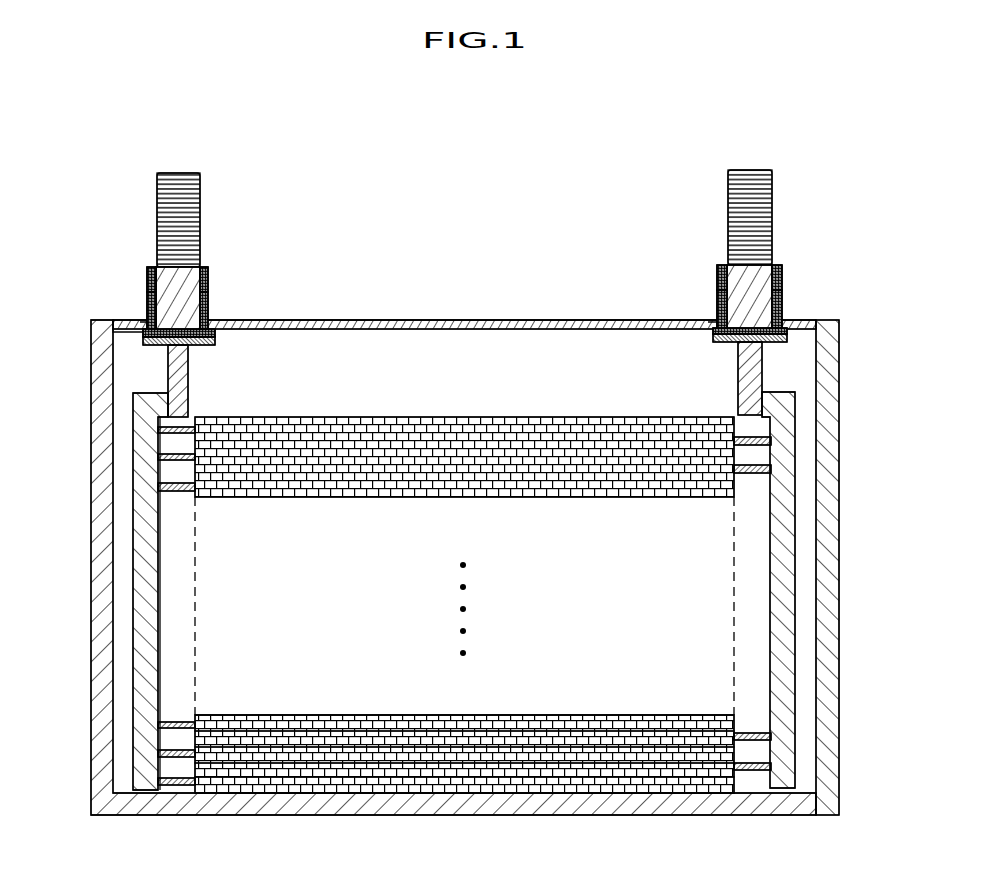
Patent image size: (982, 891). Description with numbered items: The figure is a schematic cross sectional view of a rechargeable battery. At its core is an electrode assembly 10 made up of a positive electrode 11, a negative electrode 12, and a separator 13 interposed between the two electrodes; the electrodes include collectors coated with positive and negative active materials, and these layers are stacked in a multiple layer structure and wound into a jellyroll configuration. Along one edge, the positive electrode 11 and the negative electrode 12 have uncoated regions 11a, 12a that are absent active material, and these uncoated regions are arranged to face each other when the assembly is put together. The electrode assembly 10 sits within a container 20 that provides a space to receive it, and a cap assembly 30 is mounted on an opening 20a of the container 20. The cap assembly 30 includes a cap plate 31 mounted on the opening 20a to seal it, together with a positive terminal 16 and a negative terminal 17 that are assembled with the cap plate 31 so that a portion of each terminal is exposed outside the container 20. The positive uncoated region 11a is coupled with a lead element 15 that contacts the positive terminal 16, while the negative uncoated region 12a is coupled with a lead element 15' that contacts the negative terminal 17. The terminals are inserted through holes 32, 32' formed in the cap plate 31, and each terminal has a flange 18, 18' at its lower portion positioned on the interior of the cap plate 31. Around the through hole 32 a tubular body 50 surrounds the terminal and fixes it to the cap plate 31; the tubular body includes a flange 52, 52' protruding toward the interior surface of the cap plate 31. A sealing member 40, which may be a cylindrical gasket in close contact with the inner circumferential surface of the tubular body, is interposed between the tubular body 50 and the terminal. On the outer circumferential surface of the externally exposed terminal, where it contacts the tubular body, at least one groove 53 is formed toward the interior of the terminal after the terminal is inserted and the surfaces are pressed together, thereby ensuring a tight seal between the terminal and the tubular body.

The electrode assembly 10 is at (519, 673).
The positive electrode 11 is at (285, 792).
The uncoated region 11a is at (178, 785).
The negative electrode 12 is at (646, 766).
The uncoated region 12a is at (748, 771).
The separator 13 is at (405, 762).
The lead element 15 is at (100, 591).
The lead element 15' is at (830, 590).
The positive terminal 16 is at (157, 210).
The negative terminal 17 is at (738, 184).
The flange 18 is at (114, 381).
The flange 18' is at (819, 378).
The container 20 is at (830, 665).
The opening 20a is at (118, 330).
The cap assembly 30 is at (423, 291).
The cap plate 31 is at (518, 320).
The hole 32 is at (101, 309).
The hole 32' is at (678, 304).
The sealing member 40 is at (147, 275).
The tubular body 50 is at (147, 300).
The flange 52 is at (212, 350).
The flange 52' is at (706, 346).
The groove 53 is at (210, 290).